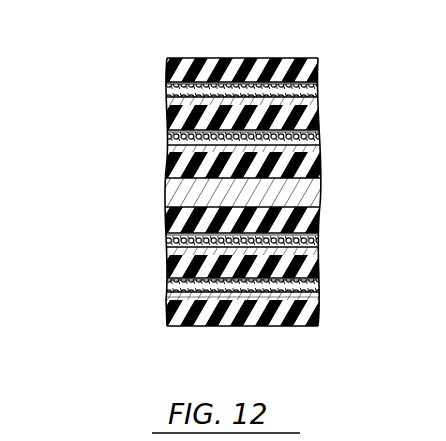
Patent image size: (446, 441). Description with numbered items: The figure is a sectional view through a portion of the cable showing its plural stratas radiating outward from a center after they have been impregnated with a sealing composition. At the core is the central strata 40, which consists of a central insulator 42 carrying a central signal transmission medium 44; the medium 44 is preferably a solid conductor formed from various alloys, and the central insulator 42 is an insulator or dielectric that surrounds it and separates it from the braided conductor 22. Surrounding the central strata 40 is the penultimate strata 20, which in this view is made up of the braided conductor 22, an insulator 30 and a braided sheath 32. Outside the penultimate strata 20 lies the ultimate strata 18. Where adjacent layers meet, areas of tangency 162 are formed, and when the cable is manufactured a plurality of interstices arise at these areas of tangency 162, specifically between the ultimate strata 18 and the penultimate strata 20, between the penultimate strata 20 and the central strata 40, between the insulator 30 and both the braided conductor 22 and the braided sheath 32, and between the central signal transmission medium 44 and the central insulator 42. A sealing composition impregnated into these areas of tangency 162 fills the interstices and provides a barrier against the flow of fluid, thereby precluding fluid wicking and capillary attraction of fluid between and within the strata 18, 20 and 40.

The ultimate strata 18 is at (148, 57).
The penultimate strata 20 is at (147, 88).
The braided conductor 22 is at (318, 141).
The insulator 30 is at (315, 121).
The braided sheath 32 is at (318, 93).
The central strata 40 is at (147, 233).
The central insulator 42 is at (318, 167).
The central signal transmission medium 44 is at (318, 193).
The area of tangency 162 is at (166, 101).